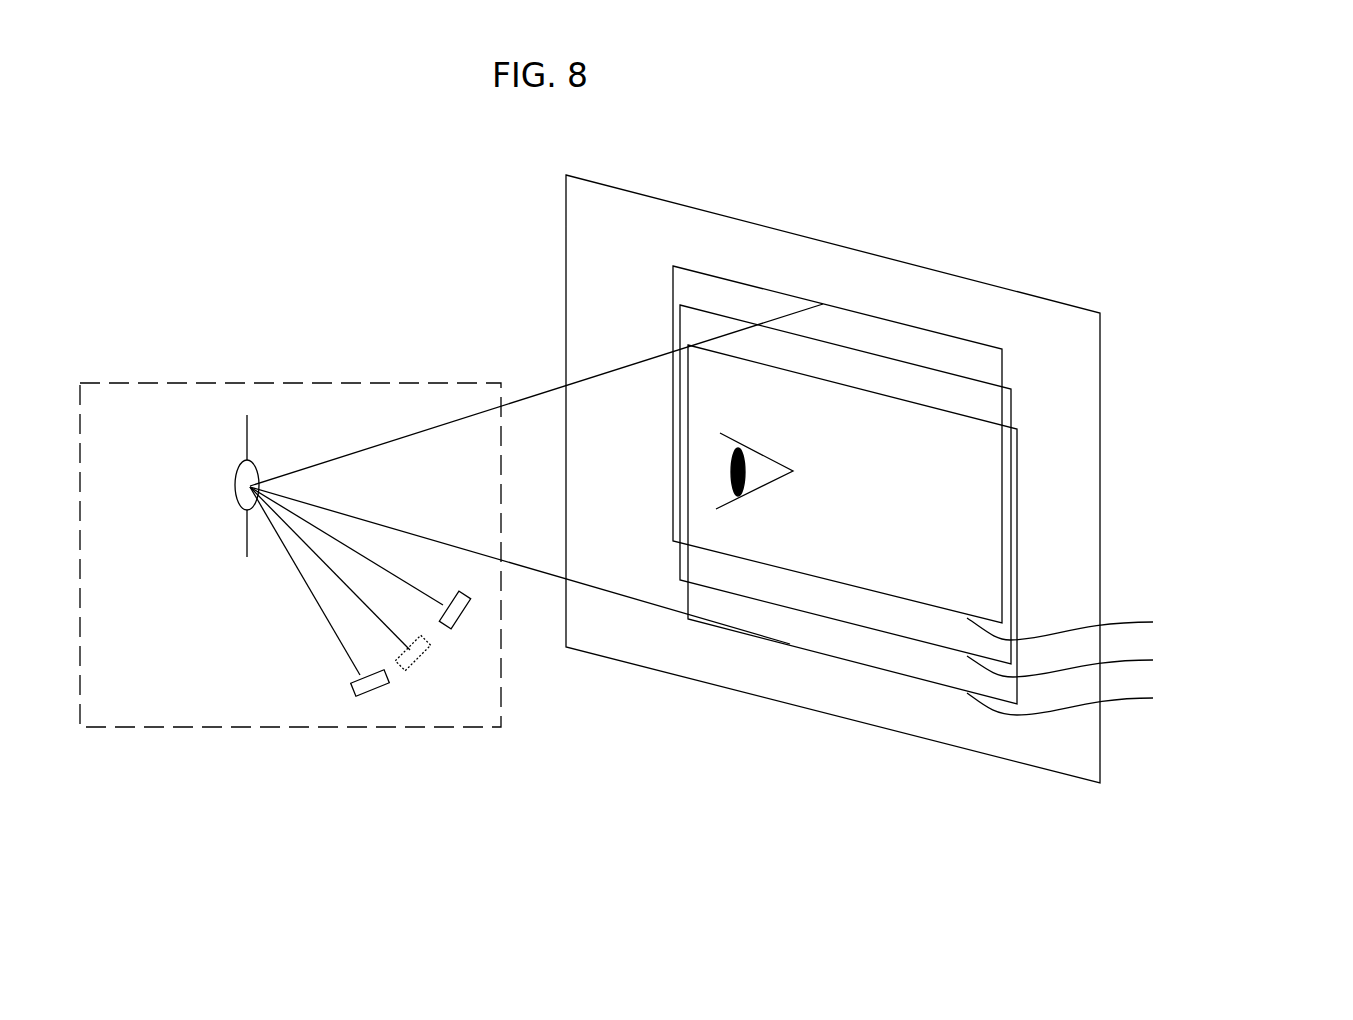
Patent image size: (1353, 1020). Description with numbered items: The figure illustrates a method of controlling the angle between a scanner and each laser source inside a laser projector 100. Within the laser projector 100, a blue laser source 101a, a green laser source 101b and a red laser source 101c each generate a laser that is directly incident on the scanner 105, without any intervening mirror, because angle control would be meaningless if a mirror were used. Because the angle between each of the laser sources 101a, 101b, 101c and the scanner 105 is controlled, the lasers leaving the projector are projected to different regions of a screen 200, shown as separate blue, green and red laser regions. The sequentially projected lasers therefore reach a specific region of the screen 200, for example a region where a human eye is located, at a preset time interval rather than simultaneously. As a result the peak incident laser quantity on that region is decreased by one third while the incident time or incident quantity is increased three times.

The laser projector 100 is at (415, 382).
The scanner 105 is at (235, 484).
The blue laser source 101a is at (357, 698).
The green laser source 101b is at (400, 663).
The red laser source 101c is at (468, 596).
The screen 200 is at (982, 283).